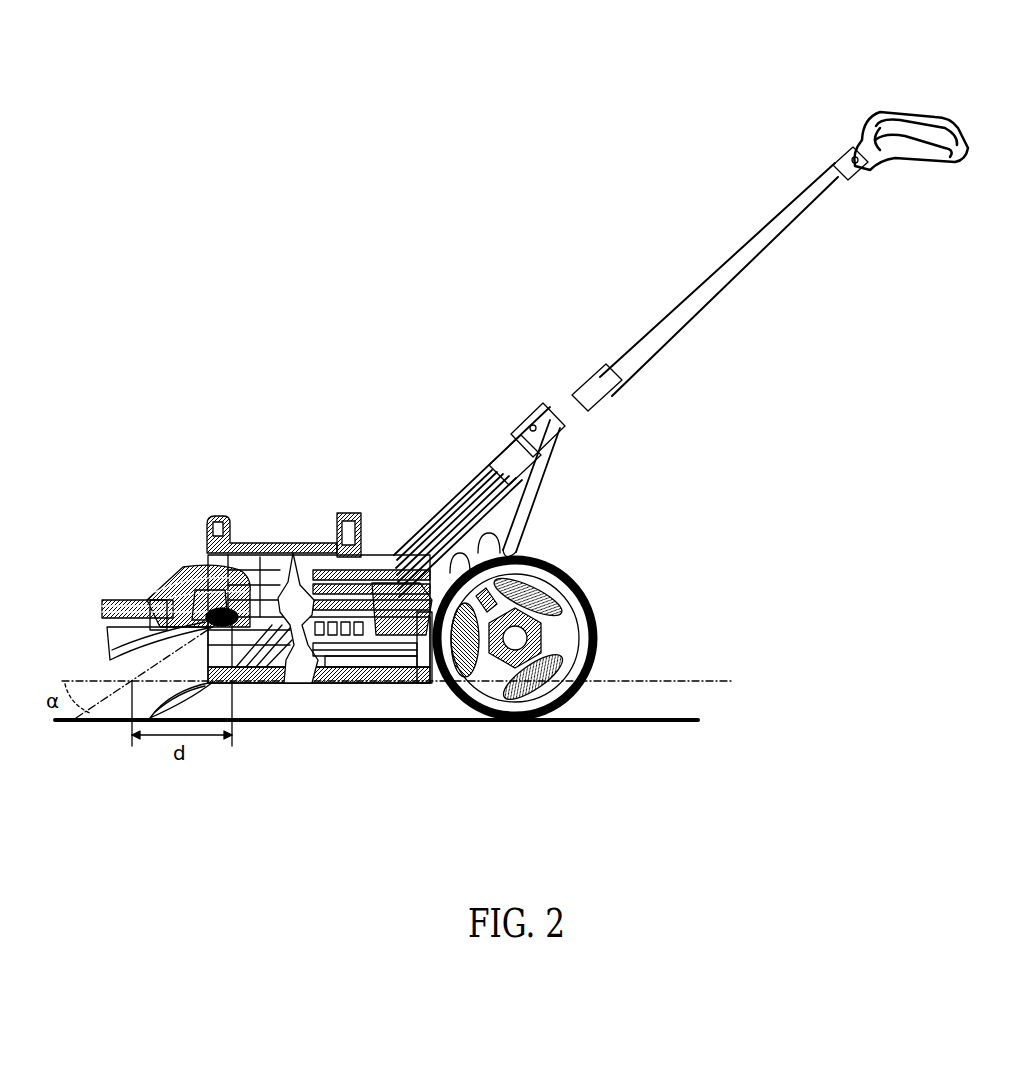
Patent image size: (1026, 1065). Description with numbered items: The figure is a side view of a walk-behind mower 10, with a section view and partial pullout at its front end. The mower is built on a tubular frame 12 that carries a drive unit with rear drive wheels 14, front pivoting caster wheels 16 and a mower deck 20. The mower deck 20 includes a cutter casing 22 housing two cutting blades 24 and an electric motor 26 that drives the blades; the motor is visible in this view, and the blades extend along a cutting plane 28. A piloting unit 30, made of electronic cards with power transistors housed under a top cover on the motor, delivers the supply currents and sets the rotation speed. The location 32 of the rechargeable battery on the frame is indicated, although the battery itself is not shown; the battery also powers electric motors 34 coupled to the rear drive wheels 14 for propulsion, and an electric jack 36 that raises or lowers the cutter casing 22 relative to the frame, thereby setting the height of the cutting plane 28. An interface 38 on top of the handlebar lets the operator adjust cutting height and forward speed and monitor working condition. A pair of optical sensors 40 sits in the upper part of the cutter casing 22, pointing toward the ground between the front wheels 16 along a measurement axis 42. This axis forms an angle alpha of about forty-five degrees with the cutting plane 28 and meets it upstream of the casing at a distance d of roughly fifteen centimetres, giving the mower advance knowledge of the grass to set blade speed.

The walk-behind mower 10 is at (334, 386).
The tubular frame 12 is at (427, 530).
The rear drive wheels 14 is at (598, 619).
The front pivoting caster wheels 16 is at (108, 598).
The mower deck 20 is at (336, 692).
The cutter casing 22 is at (420, 690).
The cutting blades 24 is at (392, 682).
The electric motor 26 is at (305, 681).
The cutting plane 28 is at (633, 681).
The piloting unit 30 is at (362, 540).
The location of the battery 32 is at (275, 518).
The electric motors for propelling the mower 34 is at (545, 503).
The electric jack 36 is at (165, 590).
The interface 38 is at (918, 112).
The optical sensors 40 is at (205, 570).
The measurement axis 42 is at (366, 516).